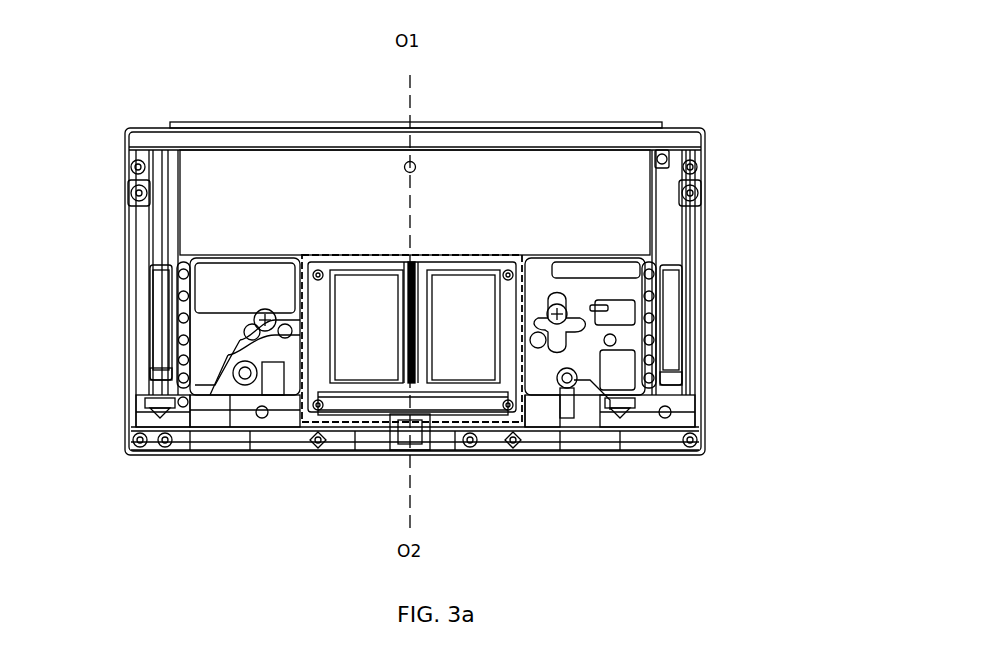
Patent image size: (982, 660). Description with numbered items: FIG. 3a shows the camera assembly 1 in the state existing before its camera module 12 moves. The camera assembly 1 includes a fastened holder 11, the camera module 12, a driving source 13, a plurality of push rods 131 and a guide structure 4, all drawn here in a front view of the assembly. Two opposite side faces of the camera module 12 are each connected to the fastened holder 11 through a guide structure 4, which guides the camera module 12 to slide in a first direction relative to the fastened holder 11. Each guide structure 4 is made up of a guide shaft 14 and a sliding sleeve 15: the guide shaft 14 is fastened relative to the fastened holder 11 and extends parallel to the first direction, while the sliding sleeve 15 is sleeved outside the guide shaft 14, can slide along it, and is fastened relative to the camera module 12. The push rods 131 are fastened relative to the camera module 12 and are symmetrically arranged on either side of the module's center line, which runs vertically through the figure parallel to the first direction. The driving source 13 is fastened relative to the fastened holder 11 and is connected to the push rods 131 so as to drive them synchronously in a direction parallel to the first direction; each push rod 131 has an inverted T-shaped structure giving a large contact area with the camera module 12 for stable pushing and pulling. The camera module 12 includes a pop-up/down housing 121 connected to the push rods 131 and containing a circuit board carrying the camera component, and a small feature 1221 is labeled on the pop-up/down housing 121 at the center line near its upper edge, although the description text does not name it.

The camera assembly 1 is at (90, 67).
The fastened holder 11 is at (700, 227).
The camera module 12 is at (668, 195).
The pop-up/down housing 121 is at (522, 183).
The pivot hole 1221 is at (400, 154).
The driving source 13 is at (524, 383).
The push rod 131 is at (261, 330).
The guide shaft 14 is at (150, 243).
The sliding sleeve 15 is at (150, 283).
The guide structure 4 is at (45, 252).